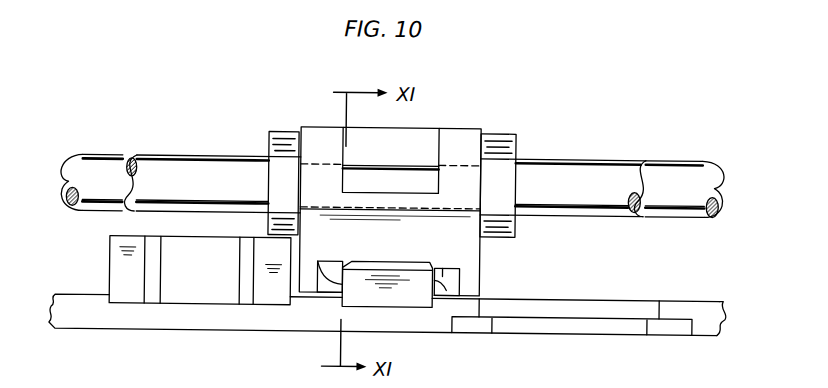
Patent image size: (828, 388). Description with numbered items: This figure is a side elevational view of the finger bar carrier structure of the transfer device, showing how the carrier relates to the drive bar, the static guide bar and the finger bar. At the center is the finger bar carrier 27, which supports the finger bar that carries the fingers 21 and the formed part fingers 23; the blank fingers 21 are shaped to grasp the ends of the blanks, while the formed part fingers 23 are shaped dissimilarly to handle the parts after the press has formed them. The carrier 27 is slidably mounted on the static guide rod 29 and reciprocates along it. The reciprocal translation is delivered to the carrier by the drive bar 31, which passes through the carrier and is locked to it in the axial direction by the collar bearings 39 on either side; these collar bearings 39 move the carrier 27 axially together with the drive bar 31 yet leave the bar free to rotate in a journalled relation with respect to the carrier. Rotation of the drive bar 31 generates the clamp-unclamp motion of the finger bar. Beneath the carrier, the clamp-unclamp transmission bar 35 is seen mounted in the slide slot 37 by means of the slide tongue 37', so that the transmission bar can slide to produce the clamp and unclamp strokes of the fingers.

The fingers 21 is at (584, 333).
The formed part fingers 23 is at (122, 278).
The finger bar carrier 27 is at (452, 137).
The static guide rod 29 is at (578, 190).
The drive bar 31 is at (698, 182).
The clamp-unclamp transmission bar 35 is at (373, 280).
The slide slot 37 is at (447, 265).
The slide tongue 37' is at (322, 260).
The collar bearing 39 is at (272, 149).